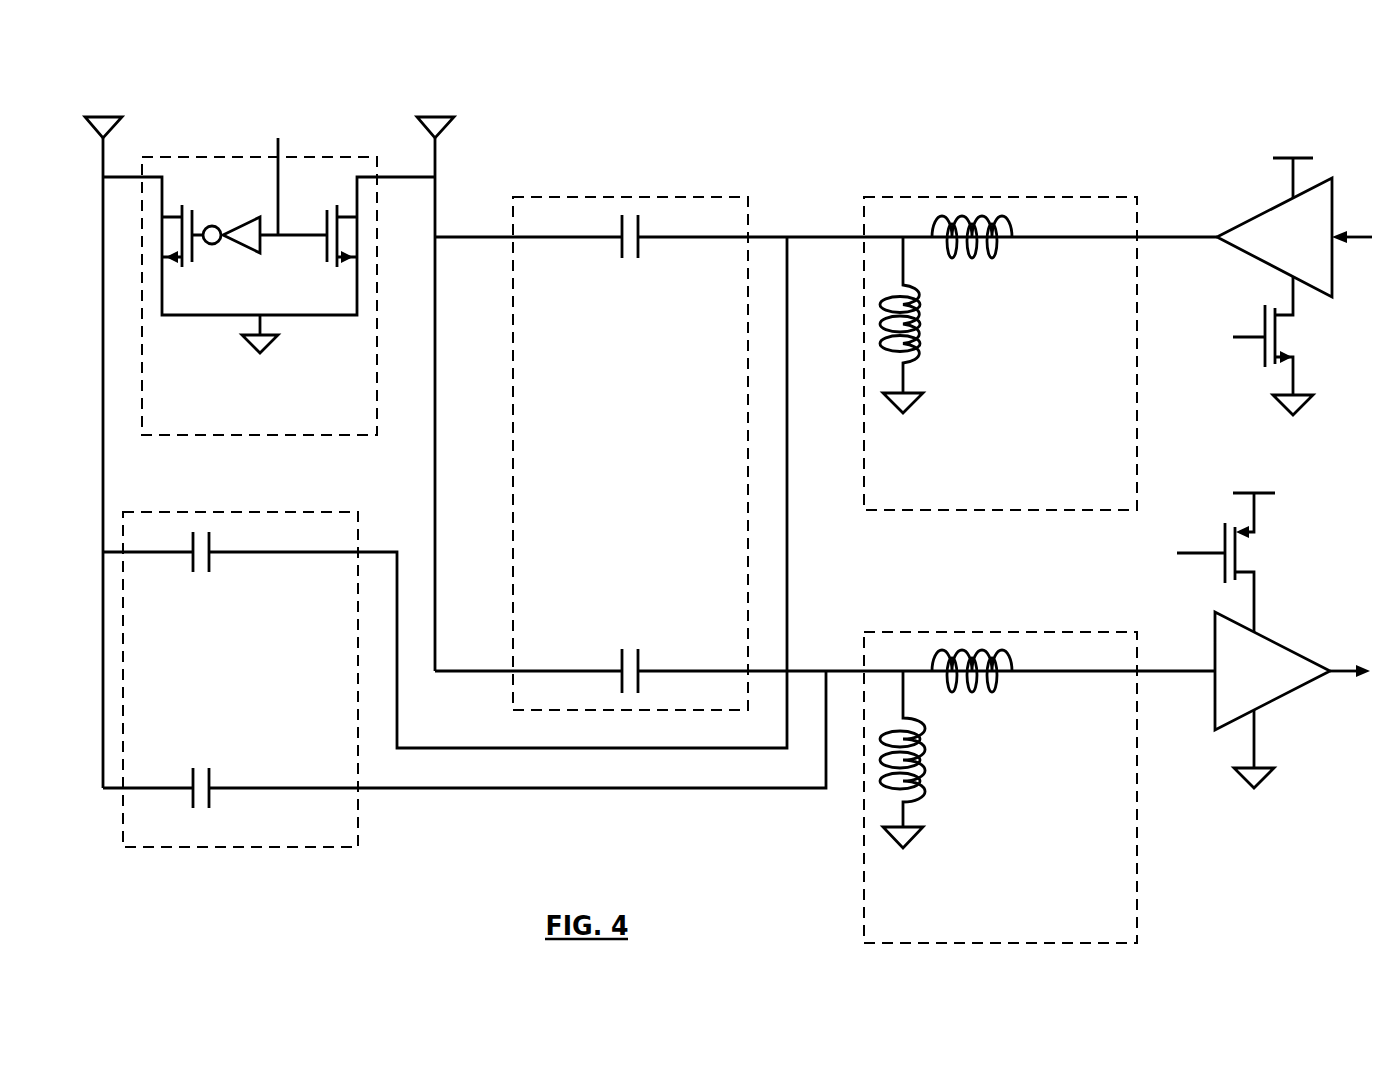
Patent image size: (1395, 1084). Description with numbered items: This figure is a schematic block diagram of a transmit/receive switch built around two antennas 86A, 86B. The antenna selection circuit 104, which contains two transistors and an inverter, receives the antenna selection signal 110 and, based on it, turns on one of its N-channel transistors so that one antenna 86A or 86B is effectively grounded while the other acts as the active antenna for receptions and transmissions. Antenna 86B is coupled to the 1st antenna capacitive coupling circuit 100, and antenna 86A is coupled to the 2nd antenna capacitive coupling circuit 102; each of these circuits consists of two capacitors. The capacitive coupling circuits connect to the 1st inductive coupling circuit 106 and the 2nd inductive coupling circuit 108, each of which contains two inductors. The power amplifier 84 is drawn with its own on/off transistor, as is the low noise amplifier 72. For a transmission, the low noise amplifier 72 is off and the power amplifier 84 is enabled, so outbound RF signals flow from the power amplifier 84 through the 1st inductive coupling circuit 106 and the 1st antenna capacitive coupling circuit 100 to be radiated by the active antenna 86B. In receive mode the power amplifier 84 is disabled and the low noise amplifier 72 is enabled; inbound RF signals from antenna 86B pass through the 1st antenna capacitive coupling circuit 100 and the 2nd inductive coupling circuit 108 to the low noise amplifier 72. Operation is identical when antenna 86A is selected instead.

The antenna 86A is at (104, 112).
The antenna 86B is at (435, 112).
The antenna selection signal 110 is at (278, 147).
The antenna selection circuit 104 is at (259, 296).
The 1st antenna capacitive coupling circuit 100 is at (630, 453).
The 2nd antenna capacitive coupling circuit 102 is at (240, 679).
The 1st inductive coupling circuit 106 is at (1000, 353).
The 2nd inductive coupling circuit 108 is at (1000, 787).
The power amplifier 84 is at (1267, 286).
The low noise amplifier 72 is at (1237, 640).